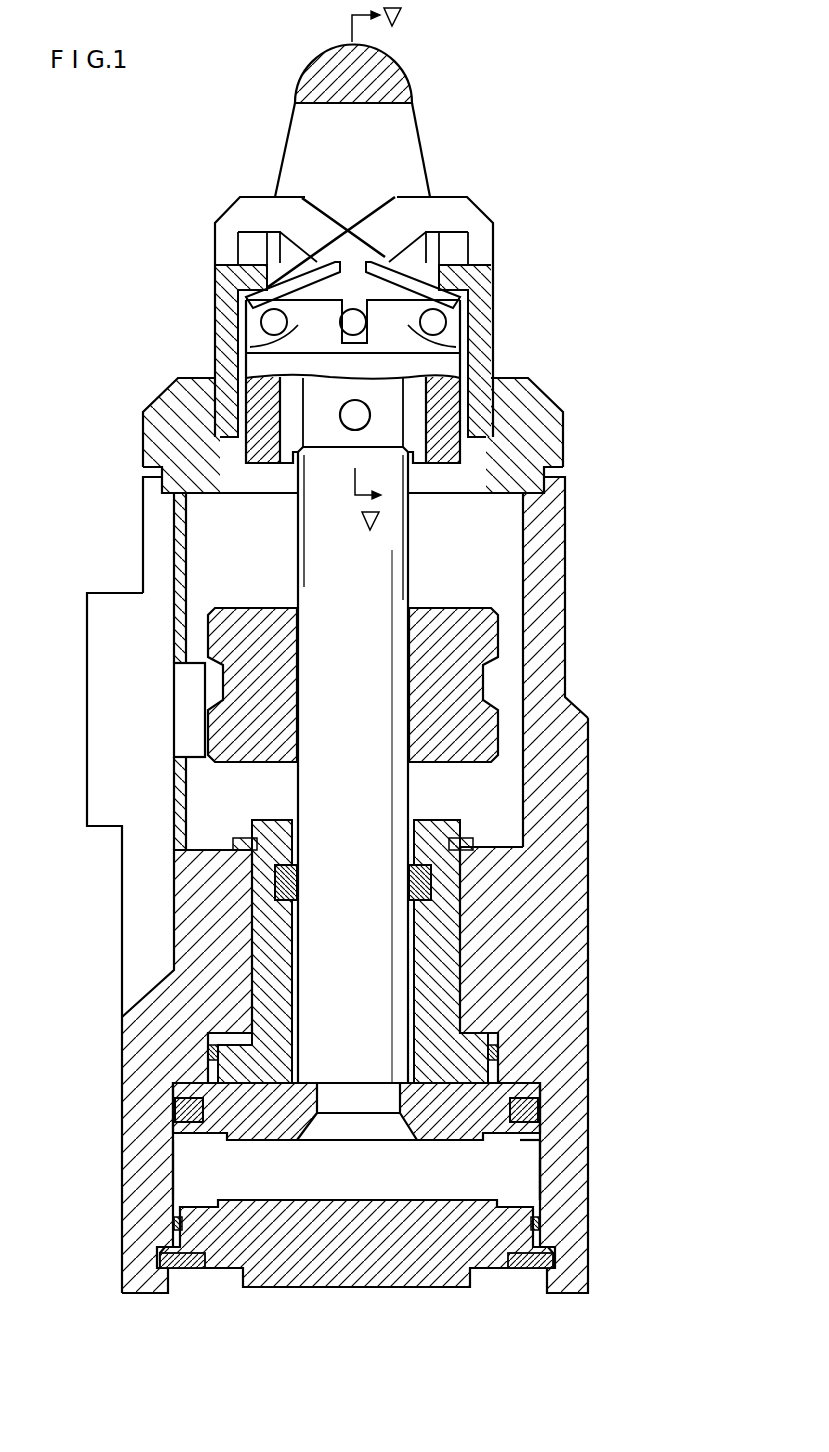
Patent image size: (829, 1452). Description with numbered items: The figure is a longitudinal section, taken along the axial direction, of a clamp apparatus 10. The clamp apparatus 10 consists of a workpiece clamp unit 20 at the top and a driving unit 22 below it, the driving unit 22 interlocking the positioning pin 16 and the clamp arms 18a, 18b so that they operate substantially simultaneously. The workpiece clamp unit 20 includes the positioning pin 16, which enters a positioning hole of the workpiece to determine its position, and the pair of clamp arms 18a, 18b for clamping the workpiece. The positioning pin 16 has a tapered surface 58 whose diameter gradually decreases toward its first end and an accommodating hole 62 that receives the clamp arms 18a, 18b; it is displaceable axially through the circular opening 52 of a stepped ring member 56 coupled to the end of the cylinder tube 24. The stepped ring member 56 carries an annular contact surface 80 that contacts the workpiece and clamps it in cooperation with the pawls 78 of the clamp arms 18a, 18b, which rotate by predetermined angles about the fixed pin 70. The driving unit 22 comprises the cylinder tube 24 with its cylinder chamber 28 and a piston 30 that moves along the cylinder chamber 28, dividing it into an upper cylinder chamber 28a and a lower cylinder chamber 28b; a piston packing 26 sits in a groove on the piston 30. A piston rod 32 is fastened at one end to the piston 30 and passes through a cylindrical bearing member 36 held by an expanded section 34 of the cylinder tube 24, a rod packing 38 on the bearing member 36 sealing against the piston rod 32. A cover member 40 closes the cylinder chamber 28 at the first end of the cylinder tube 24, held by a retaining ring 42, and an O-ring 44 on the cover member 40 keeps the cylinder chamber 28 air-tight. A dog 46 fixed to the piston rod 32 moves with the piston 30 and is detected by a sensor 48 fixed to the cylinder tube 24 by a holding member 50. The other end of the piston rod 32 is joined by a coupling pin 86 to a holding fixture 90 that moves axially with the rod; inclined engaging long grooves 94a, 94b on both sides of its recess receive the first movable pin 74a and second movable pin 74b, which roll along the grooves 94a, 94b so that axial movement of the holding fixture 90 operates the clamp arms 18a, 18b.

The clamp apparatus 10 is at (598, 111).
The positioning pin 16 is at (412, 89).
The tapered surface 58 is at (420, 140).
The accommodating hole 62 is at (410, 165).
The clamp arm 18a is at (248, 212).
The clamp arm 18b is at (465, 212).
The workpiece clamp unit 20 is at (512, 224).
The pawls 78 is at (225, 262).
The annular contact surface 80 is at (475, 268).
The circular opening 52 is at (437, 273).
The fixed pin 70 is at (352, 308).
The first movable pin 74a is at (262, 323).
The second movable pin 74b is at (446, 322).
The engaging long groove 94a is at (290, 332).
The engaging long groove 94b is at (418, 332).
The holding fixture 90 is at (448, 402).
The coupling pin 86 is at (340, 415).
The stepped ring member 56 is at (557, 442).
The driving unit 22 is at (587, 712).
The holding member 50 is at (112, 622).
The sensor 48 is at (190, 702).
The cylinder tube 24 is at (565, 822).
The dog 46 is at (455, 660).
The piston rod 32 is at (375, 798).
The expanded section 34 is at (470, 912).
The rod packing 38 is at (272, 882).
The bearing member 36 is at (450, 978).
The cylinder chamber 28 is at (372, 1182).
The piston 30 is at (520, 1175).
The upper cylinder chamber 28a is at (517, 1068).
The lower cylinder chamber 28b is at (512, 1182).
The piston packing 26 is at (528, 1112).
The cover member 40 is at (300, 1272).
The retaining ring 42 is at (185, 1268).
The O-ring 44 is at (172, 1226).